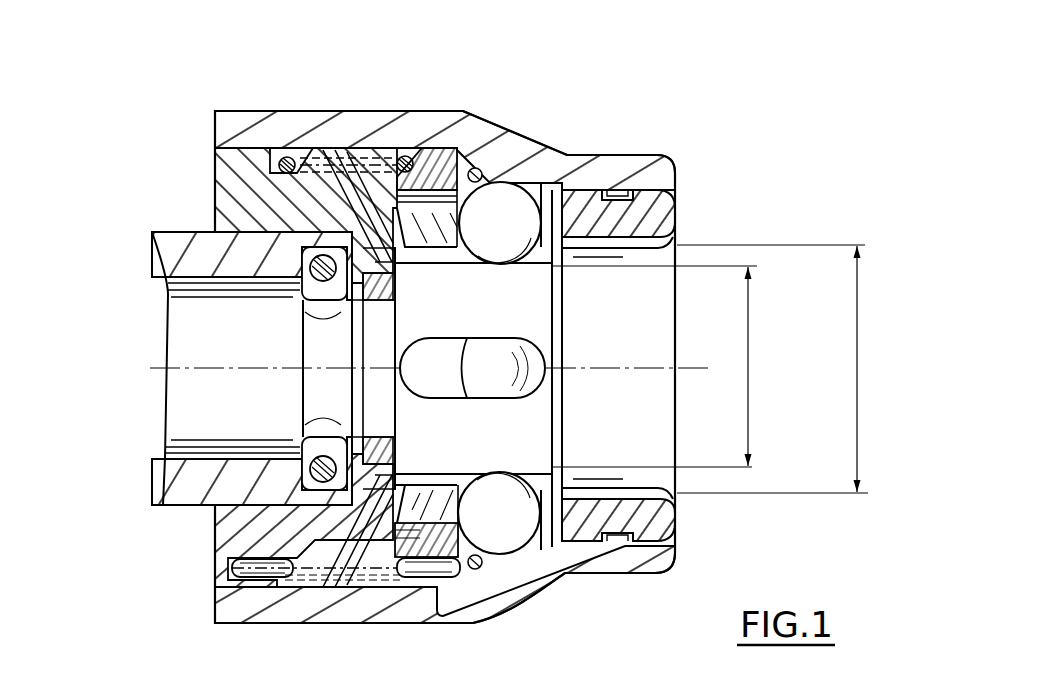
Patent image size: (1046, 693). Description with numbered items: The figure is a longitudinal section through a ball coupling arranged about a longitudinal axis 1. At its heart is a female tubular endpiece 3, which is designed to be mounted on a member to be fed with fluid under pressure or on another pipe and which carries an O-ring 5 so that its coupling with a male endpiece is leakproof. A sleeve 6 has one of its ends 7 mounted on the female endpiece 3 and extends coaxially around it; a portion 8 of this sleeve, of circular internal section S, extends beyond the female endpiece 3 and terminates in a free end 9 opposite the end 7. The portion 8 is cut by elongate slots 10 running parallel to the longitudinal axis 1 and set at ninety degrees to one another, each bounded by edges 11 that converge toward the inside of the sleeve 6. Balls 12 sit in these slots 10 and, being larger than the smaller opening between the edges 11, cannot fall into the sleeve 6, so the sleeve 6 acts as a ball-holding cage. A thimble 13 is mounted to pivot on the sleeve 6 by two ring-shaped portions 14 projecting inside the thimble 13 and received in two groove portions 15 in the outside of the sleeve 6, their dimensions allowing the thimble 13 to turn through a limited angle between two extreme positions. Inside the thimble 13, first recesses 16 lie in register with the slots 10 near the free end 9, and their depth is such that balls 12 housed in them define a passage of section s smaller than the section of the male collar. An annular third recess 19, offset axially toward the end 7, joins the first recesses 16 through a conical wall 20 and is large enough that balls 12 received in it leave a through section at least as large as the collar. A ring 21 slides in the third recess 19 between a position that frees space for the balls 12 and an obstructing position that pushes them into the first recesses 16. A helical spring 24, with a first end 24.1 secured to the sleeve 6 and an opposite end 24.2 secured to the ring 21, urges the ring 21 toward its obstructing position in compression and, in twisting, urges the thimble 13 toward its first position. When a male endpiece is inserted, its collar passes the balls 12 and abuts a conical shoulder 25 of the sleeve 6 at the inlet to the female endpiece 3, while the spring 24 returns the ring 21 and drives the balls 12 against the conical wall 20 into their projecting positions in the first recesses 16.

The longitudinal axis 1 is at (190, 368).
The female tubular endpiece 3 is at (178, 470).
The O-ring 5 is at (263, 510).
The sleeve 6 is at (209, 177).
The end of the sleeve 7 is at (227, 213).
The portion of the sleeve 8 is at (392, 240).
The free end of the sleeve 9 is at (657, 227).
The elongate slots 10 is at (470, 560).
The edges of the slots 11 is at (446, 496).
The balls 12 is at (503, 192).
The thimble 13 is at (210, 130).
The ring-shaped portions 14 is at (630, 193).
The groove portions 15 is at (610, 190).
The first recesses 16 is at (508, 185).
The third recess 19 is at (453, 170).
The conical wall 20 is at (477, 170).
The ring 21 is at (430, 173).
The spring 24 is at (277, 157).
The first end of the spring 24.1 is at (258, 570).
The opposite end of the spring 24.2 is at (433, 567).
The conical shoulder 25 is at (355, 235).
The passage section s is at (664, 366).
The circular internal section of the sleeve portion S is at (783, 369).